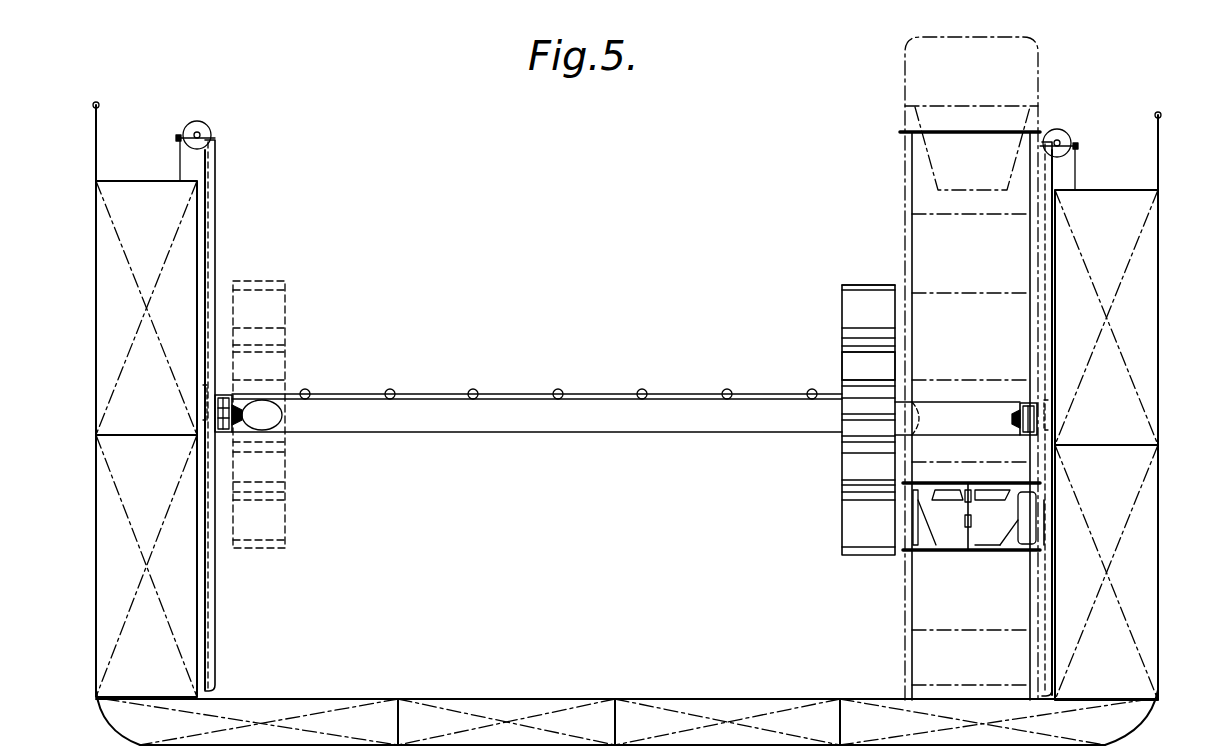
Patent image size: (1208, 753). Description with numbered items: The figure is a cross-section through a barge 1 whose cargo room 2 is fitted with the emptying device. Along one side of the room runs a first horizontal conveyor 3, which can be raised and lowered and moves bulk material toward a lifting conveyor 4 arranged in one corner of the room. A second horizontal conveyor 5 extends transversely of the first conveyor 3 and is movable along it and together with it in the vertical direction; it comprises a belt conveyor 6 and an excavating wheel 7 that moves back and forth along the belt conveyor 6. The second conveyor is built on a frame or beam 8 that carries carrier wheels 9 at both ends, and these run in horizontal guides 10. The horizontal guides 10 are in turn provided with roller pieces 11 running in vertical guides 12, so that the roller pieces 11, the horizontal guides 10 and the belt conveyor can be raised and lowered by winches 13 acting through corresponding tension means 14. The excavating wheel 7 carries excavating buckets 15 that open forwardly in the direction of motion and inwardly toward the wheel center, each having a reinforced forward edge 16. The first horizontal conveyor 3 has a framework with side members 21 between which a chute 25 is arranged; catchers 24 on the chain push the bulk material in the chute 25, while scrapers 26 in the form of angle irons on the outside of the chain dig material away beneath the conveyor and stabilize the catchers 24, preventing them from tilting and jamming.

The barge 1 is at (92, 622).
The room 2 is at (558, 556).
The first horizontal conveyor 3 is at (1012, 527).
The lifting conveyor 4 is at (912, 190).
The second horizontal conveyor 5 is at (686, 396).
The belt conveyor 6 is at (463, 393).
The excavating wheel 7 is at (283, 496).
The frame or beam 8 is at (596, 418).
The carrier wheels 9 is at (236, 398).
The horizontal guides 10 is at (226, 432).
The roller pieces 11 is at (205, 388).
The vertical guides 12 is at (207, 605).
The winches 13 is at (203, 130).
The tension means 14 is at (213, 187).
The excavating buckets 15 is at (855, 369).
The reinforced forward edge 16 is at (842, 287).
The side members 21 is at (1046, 542).
The catchers 24 is at (970, 553).
The chute 25 is at (962, 550).
The scrapers 26 is at (1018, 552).